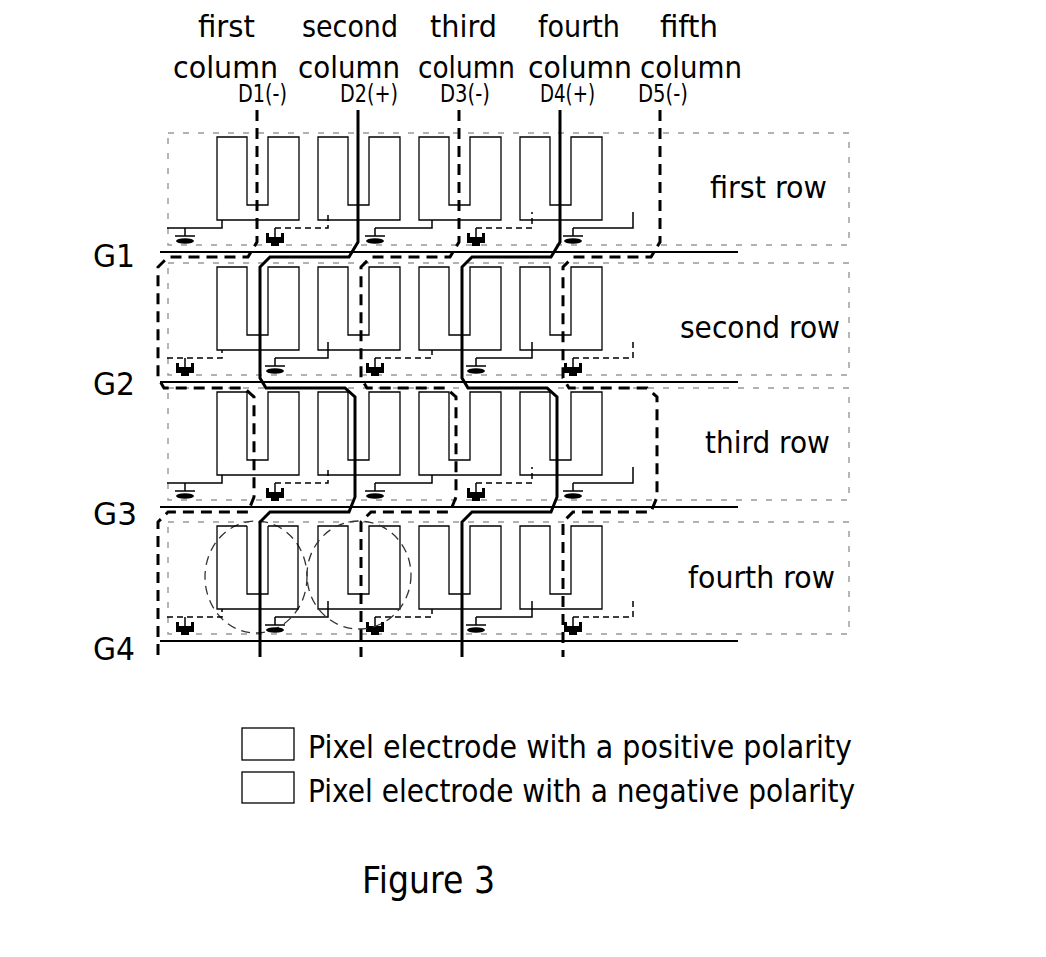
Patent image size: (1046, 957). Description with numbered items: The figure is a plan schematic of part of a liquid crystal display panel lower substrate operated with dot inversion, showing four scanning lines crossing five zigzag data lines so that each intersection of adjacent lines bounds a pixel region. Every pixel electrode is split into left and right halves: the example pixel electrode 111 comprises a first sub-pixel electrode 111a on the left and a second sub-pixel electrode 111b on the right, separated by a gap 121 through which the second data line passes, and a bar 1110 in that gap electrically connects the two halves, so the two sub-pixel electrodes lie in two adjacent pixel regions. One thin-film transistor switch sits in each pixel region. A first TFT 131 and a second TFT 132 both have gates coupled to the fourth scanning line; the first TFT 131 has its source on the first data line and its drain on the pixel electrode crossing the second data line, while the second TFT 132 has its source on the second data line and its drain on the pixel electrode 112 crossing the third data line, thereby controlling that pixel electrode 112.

The pixel electrode 111 is at (216, 590).
The first sub-pixel electrode 111a is at (223, 552).
The second sub-pixel electrode 111b is at (280, 565).
The bar 1110 is at (250, 602).
The pixel electrode 112 is at (397, 598).
The gap 121 is at (250, 582).
The first TFT 131 is at (180, 632).
The second TFT 132 is at (267, 628).